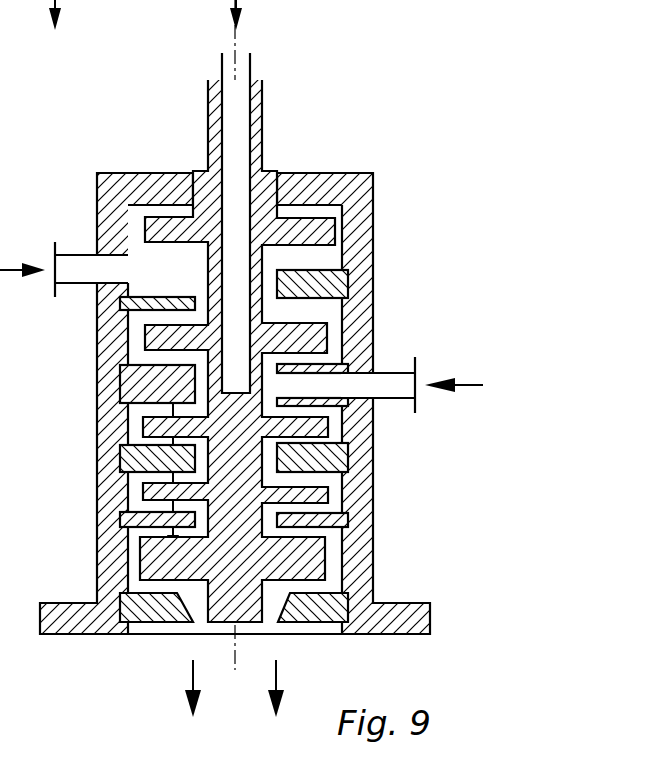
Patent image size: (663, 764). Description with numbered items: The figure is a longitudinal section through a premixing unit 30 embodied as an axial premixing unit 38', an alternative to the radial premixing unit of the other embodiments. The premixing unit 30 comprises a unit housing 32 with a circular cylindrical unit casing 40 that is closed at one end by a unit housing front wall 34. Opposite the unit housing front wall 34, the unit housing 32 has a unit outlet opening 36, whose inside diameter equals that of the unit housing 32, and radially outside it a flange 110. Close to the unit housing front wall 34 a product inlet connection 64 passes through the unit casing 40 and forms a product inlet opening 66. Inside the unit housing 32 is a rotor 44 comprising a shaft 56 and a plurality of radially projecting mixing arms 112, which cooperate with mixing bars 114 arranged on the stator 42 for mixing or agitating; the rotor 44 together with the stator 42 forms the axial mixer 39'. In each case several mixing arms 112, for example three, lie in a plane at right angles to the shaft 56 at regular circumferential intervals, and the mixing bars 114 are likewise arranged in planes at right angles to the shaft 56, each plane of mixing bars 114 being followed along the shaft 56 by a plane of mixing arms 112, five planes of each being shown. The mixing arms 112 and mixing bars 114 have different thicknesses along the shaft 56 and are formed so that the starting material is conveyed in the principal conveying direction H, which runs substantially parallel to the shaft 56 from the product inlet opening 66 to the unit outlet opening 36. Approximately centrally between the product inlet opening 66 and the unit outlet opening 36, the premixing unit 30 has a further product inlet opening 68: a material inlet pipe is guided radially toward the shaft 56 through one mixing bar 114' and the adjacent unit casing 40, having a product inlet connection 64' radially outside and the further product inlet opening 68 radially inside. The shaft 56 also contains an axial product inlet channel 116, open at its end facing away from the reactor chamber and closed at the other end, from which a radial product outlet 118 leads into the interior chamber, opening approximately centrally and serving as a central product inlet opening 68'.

The premixing unit 30 is at (533, 83).
The unit housing 32 is at (355, 177).
The unit housing front wall 34 is at (152, 187).
The unit outlet opening 36 is at (317, 630).
The axial premixing unit 38' is at (548, 66).
The axial mixer 39' is at (400, 195).
The unit casing 40 is at (372, 302).
The stator 42 is at (342, 268).
The rotor 44 is at (312, 333).
The shaft 56 is at (257, 130).
The product inlet connection 64 is at (68, 243).
The product inlet connection 64' is at (383, 398).
The product inlet opening 66 is at (128, 260).
The further product inlet opening 68 is at (377, 424).
The central product inlet opening 68' is at (122, 363).
The flange 110 is at (398, 613).
The mixing arms 112 is at (290, 222).
The mixing bars 114 is at (240, 461).
The mixing bar 114' is at (392, 367).
The product inlet channel 116 is at (240, 120).
The radial product outlet 118 is at (192, 385).
The principal conveying direction H is at (100, 477).